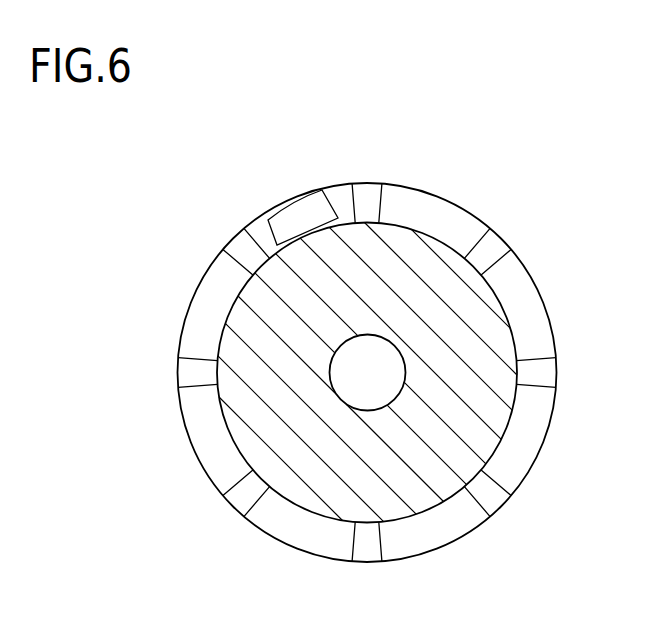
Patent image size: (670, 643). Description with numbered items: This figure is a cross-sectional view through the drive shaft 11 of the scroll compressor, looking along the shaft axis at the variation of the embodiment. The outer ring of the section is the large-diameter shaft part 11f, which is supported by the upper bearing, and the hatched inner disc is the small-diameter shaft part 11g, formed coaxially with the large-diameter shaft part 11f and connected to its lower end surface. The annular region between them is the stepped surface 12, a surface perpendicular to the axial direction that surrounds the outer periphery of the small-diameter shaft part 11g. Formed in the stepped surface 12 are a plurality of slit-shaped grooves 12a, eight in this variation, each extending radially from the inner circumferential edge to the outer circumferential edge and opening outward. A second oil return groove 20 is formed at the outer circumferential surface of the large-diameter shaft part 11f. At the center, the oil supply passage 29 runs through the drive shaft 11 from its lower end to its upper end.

The drive shaft 11 is at (412, 372).
The large-diameter shaft part 11f is at (556, 342).
The small-diameter shaft part 11g is at (510, 430).
The stepped surface 12 is at (367, 335).
The slit-shaped groove 12a is at (370, 190).
The second oil return groove 20 is at (268, 214).
The oil supply passage 29 is at (332, 380).